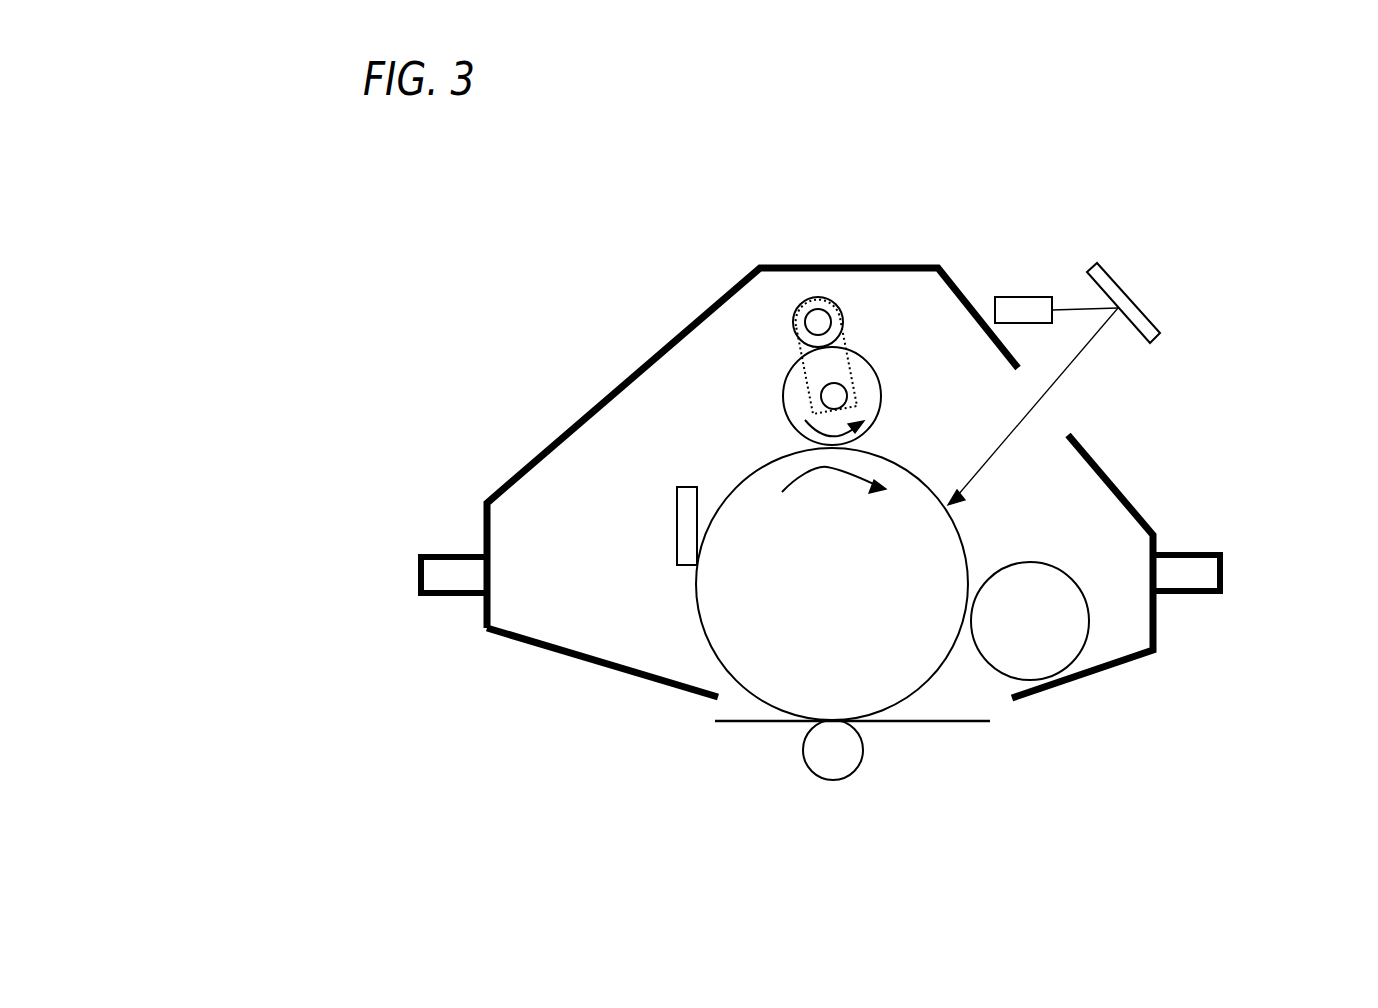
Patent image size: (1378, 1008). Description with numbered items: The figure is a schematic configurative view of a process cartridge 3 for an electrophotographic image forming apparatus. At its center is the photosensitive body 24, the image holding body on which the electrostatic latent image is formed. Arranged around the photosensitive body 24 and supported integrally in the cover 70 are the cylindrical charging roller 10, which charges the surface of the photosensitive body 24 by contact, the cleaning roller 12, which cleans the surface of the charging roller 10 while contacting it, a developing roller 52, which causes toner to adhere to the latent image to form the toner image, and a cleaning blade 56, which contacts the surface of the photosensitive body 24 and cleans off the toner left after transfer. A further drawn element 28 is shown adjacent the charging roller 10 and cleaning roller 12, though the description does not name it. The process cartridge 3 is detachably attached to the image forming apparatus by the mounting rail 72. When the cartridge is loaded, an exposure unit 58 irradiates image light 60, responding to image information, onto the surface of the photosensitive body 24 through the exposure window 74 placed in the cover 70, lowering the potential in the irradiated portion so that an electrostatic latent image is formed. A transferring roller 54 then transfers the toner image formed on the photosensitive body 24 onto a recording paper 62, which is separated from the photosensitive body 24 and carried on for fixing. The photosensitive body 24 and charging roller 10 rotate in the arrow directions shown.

The process cartridge 3 is at (843, 205).
The charging roller 10 is at (790, 375).
The cleaning roller 12 is at (842, 320).
The photosensitive body 24 is at (700, 618).
The developing roller 28 is at (862, 365).
The developing roller 52 is at (1077, 588).
The transferring roller 54 is at (820, 777).
The cleaning blade 56 is at (677, 510).
The exposure unit 58 is at (1033, 297).
The image light 60 is at (990, 463).
The recording paper 62 is at (943, 722).
The cover 70 is at (788, 483).
The mounting rail 72 is at (694, 574).
The exposure window 74 is at (1181, 401).